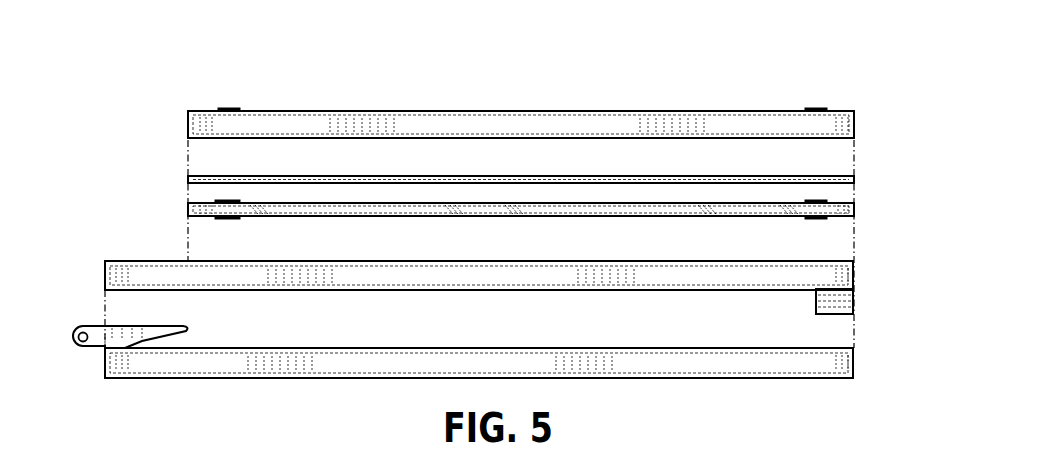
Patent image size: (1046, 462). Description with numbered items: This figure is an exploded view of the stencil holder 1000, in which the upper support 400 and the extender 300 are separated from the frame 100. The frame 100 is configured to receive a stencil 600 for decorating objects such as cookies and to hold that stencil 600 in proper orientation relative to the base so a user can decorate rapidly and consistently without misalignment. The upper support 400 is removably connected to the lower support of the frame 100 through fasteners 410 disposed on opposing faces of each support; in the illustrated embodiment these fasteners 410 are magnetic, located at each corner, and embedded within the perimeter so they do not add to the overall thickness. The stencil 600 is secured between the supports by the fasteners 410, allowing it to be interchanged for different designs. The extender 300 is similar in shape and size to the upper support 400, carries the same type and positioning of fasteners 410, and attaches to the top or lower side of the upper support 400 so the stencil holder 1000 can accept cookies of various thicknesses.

The stencil holder 1000 is at (134, 108).
The upper support 400 is at (500, 126).
The stencil 600 is at (188, 178).
The extender 300 is at (855, 208).
The fasteners 410 is at (825, 215).
The frame 100 is at (855, 356).